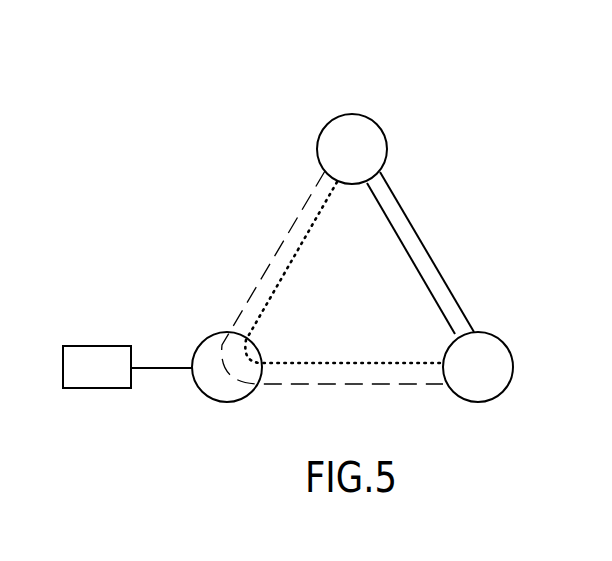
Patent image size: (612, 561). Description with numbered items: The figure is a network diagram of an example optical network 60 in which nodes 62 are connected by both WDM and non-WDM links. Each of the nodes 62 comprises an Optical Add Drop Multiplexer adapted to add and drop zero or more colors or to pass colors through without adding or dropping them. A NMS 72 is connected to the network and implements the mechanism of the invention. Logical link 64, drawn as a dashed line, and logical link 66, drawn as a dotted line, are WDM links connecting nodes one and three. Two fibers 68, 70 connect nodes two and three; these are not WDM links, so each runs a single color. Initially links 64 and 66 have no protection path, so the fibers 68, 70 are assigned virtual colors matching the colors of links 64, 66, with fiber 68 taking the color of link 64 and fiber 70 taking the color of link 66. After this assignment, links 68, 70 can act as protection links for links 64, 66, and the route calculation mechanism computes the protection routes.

The optical network 60 is at (135, 207).
The nodes 62 is at (358, 114).
The logical link 64 is at (280, 242).
The logical link 66 is at (327, 362).
The fiber 68 is at (440, 265).
The fiber 70 is at (410, 262).
The NMS 72 is at (100, 345).